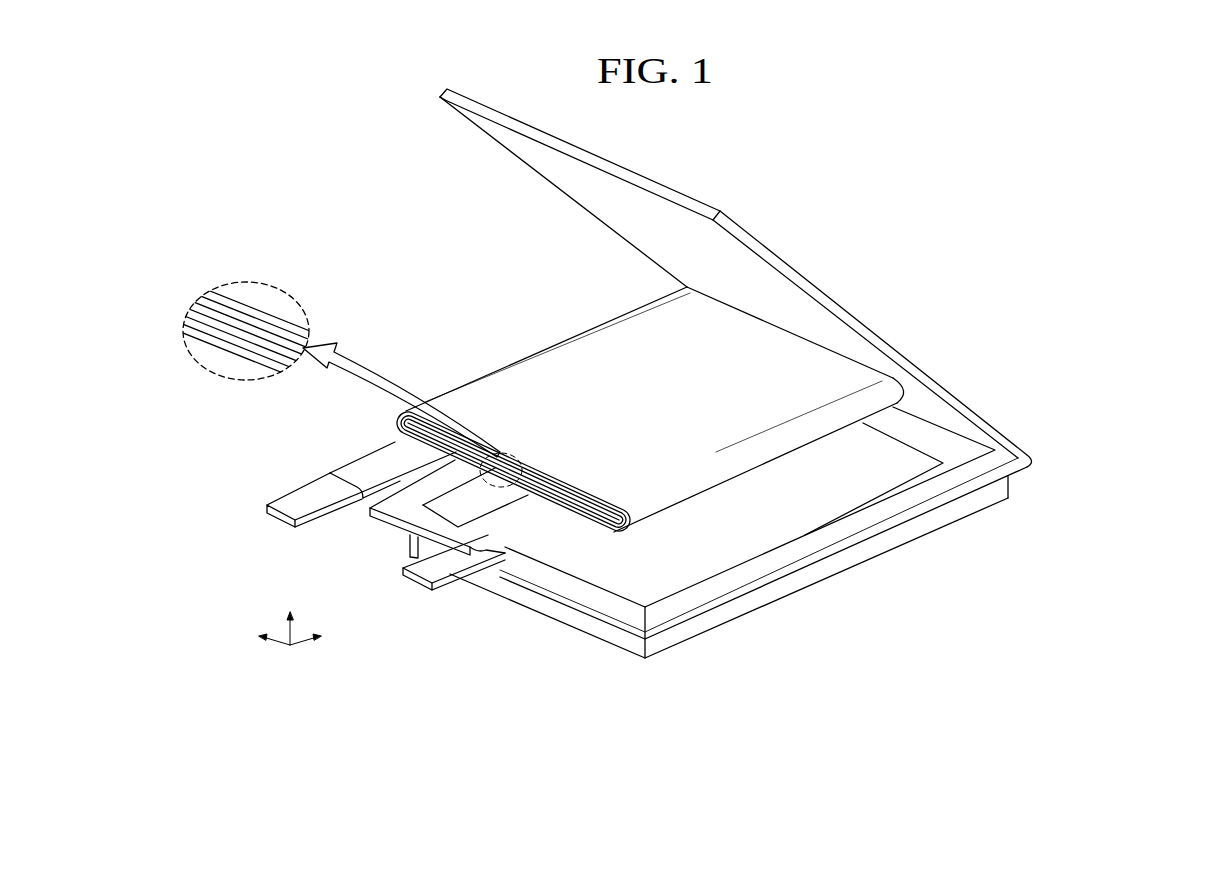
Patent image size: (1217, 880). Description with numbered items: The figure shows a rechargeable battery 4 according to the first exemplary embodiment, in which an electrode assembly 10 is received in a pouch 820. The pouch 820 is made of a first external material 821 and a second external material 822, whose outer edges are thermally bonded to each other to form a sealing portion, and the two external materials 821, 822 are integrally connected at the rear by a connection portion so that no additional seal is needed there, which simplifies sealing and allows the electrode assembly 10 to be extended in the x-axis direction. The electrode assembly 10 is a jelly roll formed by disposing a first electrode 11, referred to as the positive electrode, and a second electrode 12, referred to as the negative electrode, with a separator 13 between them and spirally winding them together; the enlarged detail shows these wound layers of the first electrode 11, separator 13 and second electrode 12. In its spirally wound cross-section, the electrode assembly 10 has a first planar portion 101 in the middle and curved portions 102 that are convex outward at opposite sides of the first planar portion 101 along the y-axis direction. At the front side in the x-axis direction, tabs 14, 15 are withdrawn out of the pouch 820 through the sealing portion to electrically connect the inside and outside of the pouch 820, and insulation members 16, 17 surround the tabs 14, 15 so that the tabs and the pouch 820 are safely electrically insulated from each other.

The rechargeable battery 4 is at (799, 161).
The electrode assembly 10 is at (818, 448).
The first planar portion 101 is at (663, 450).
The curved portions 102 is at (522, 359).
The first electrode 11 is at (220, 330).
The second electrode 12 is at (247, 317).
The separator 13 is at (267, 340).
The tab 14 is at (315, 500).
The tab 15 is at (460, 562).
The insulation member 16 is at (394, 457).
The insulation member 17 is at (538, 532).
The pouch 820 is at (1127, 405).
The first external material 821 is at (958, 497).
The second external material 822 is at (968, 408).